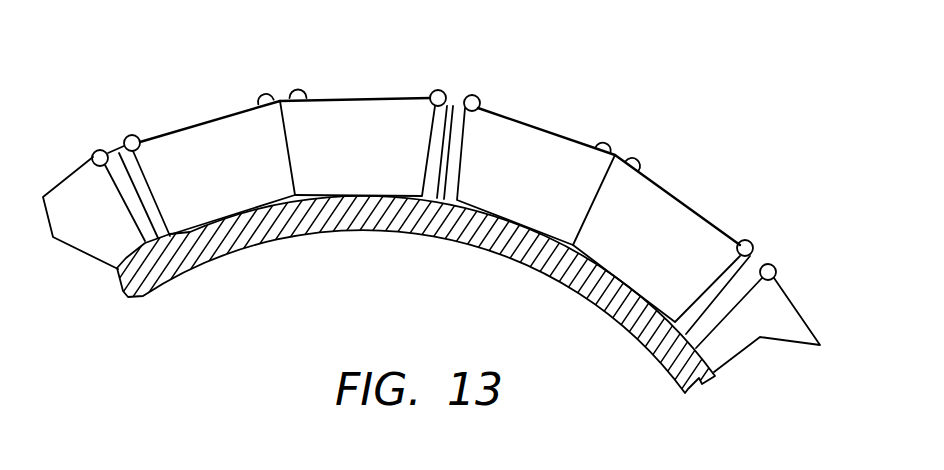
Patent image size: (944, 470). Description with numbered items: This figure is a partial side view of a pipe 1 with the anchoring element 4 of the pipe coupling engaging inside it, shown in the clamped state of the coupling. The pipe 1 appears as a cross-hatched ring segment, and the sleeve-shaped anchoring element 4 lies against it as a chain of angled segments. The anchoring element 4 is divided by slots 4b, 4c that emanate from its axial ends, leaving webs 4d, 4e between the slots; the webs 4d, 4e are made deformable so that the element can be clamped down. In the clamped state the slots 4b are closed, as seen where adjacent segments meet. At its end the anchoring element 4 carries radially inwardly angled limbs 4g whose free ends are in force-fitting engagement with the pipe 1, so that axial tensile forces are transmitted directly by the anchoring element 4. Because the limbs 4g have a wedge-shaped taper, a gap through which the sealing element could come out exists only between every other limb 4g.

The pipe 1 is at (347, 220).
The anchoring element 4 is at (561, 127).
The slot 4b is at (290, 130).
The slot 4c is at (443, 107).
The web 4d is at (108, 152).
The web 4e is at (266, 94).
The limb 4g is at (220, 157).